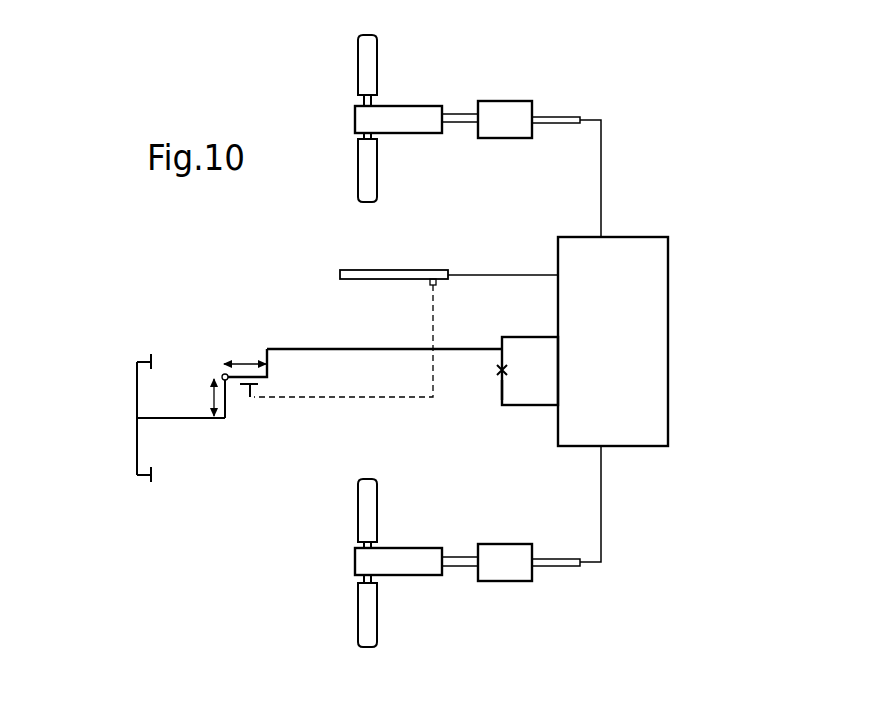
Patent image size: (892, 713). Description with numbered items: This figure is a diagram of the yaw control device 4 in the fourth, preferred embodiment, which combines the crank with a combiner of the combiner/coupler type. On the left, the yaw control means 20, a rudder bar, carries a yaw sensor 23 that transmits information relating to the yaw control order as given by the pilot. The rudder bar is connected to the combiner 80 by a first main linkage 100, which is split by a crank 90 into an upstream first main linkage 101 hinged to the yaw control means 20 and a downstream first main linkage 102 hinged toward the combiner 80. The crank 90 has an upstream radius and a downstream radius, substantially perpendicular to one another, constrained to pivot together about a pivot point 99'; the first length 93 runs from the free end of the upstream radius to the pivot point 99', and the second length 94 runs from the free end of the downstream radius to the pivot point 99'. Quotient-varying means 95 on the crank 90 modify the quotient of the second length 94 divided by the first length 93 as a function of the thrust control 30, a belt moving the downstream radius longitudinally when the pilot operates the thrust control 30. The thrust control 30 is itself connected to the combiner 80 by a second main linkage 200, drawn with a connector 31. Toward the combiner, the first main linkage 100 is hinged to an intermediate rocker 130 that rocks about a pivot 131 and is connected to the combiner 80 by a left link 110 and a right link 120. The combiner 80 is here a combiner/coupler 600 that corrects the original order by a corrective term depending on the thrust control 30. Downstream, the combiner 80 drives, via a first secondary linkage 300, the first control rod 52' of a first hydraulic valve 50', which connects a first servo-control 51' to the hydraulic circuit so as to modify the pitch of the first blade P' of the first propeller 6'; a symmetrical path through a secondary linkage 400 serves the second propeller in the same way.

The yaw control device 4 is at (118, 372).
The first propeller 6' is at (338, 336).
The first blade P' is at (388, 113).
The yaw control means 20 is at (113, 406).
The yaw sensor 23 is at (136, 428).
The thrust control 30 is at (351, 292).
The connector 31 is at (429, 283).
The first hydraulic valve 50' is at (502, 97).
The first servo-control 51' is at (398, 98).
The first control rod 52' is at (566, 96).
The combiner 80 is at (646, 332).
The crank 90 is at (221, 358).
The first length 93 is at (198, 397).
The second length 94 is at (245, 351).
The quotient-varying means 95 is at (256, 392).
The pivot point 99' is at (242, 414).
The first main linkage 100 is at (365, 308).
The upstream first main linkage 101 is at (178, 417).
The downstream first main linkage 102 is at (338, 335).
The left link 110 is at (497, 373).
The right link 120 is at (528, 405).
The intermediate rocker 130 is at (502, 392).
The pivot 131 is at (497, 373).
The second main linkage 200 is at (499, 266).
The first secondary linkage 300 is at (550, 147).
The secondary linkage 400 is at (535, 540).
The combiner/coupler 600 is at (669, 246).